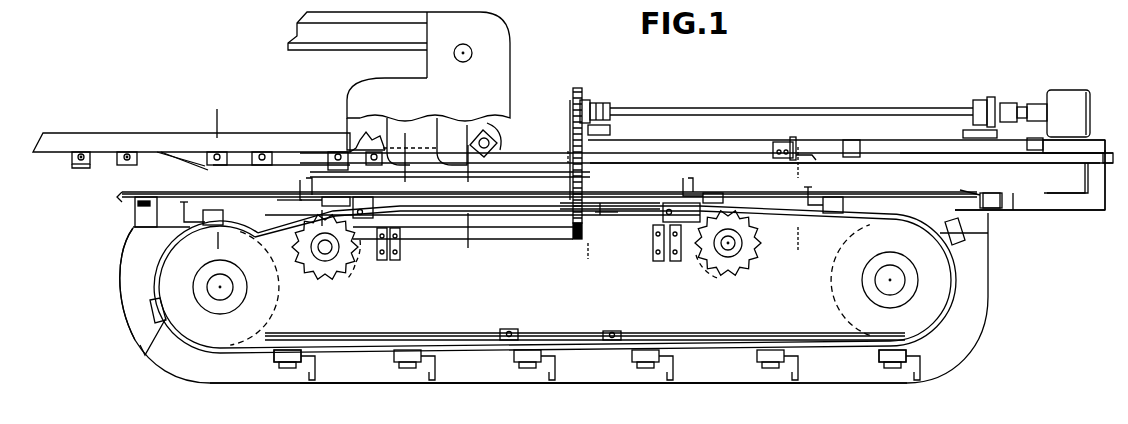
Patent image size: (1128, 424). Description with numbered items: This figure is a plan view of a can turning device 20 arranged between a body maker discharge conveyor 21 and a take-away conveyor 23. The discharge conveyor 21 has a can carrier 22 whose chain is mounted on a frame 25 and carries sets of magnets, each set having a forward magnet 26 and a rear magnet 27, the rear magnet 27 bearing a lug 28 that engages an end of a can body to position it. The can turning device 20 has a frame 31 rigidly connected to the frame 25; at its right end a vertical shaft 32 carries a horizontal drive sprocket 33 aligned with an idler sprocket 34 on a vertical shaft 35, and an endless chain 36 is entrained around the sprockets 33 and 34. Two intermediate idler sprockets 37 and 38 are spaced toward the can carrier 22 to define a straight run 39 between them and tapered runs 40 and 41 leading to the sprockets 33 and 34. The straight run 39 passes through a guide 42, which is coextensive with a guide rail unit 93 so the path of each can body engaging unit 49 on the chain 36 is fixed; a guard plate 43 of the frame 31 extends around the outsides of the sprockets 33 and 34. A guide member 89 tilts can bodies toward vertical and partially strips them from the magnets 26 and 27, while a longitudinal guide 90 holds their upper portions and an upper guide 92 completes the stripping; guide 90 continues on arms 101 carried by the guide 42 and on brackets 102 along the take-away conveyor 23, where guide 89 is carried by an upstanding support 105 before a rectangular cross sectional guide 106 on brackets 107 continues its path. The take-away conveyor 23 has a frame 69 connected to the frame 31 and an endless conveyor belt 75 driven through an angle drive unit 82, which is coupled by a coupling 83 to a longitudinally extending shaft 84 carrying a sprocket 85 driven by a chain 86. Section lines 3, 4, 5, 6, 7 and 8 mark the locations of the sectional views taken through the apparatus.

The can turning device 20 is at (718, 388).
The body maker discharge conveyor 21 is at (77, 123).
The can carrier 22 is at (293, 128).
The take-away conveyor 23 is at (1043, 212).
The frame 25 is at (493, 38).
The forward magnet 26 is at (127, 167).
The rear magnet 27 is at (88, 168).
The lug 28 is at (72, 164).
The frame 31 is at (133, 232).
The vertical shaft 32 is at (893, 290).
The drive sprocket 33 is at (843, 310).
The idler sprocket 34 is at (273, 298).
The vertical shaft 35 is at (227, 290).
The endless chain 36 is at (377, 338).
The idler sprocket 37 is at (733, 267).
The idler sprocket 38 is at (355, 265).
The straight run 39 is at (330, 247).
The tapered run 40 is at (848, 215).
The tapered run 41 is at (260, 213).
The guide 42 is at (493, 215).
The guard plate 43 is at (363, 382).
The can body engaging unit 49 is at (287, 373).
The frame 69 is at (1097, 212).
The endless conveyor belt 75 is at (1018, 182).
The angle drive unit 82 is at (1075, 97).
The coupling 83 is at (1015, 107).
The longitudinally extending shaft 84 is at (918, 110).
The sprocket 85 is at (575, 100).
The chain 86 is at (572, 113).
The guide member 89 is at (185, 165).
The longitudinal guide 90 is at (213, 192).
The upper guide 92 is at (417, 127).
The guide rail unit 93 is at (510, 167).
The arms 101 is at (135, 214).
The brackets 102 is at (993, 215).
The upstanding support 105 is at (782, 140).
The rectangular cross sectional guide 106 is at (910, 160).
The brackets 107 is at (860, 136).
The section line 3- 3 is at (217, 109).
The section line 4- 4 is at (375, 133).
The section line 5- 5 is at (468, 145).
The section line 6- 6 is at (568, 151).
The section line 7- 7 is at (833, 147).
The section line 8- 8 is at (277, 178).